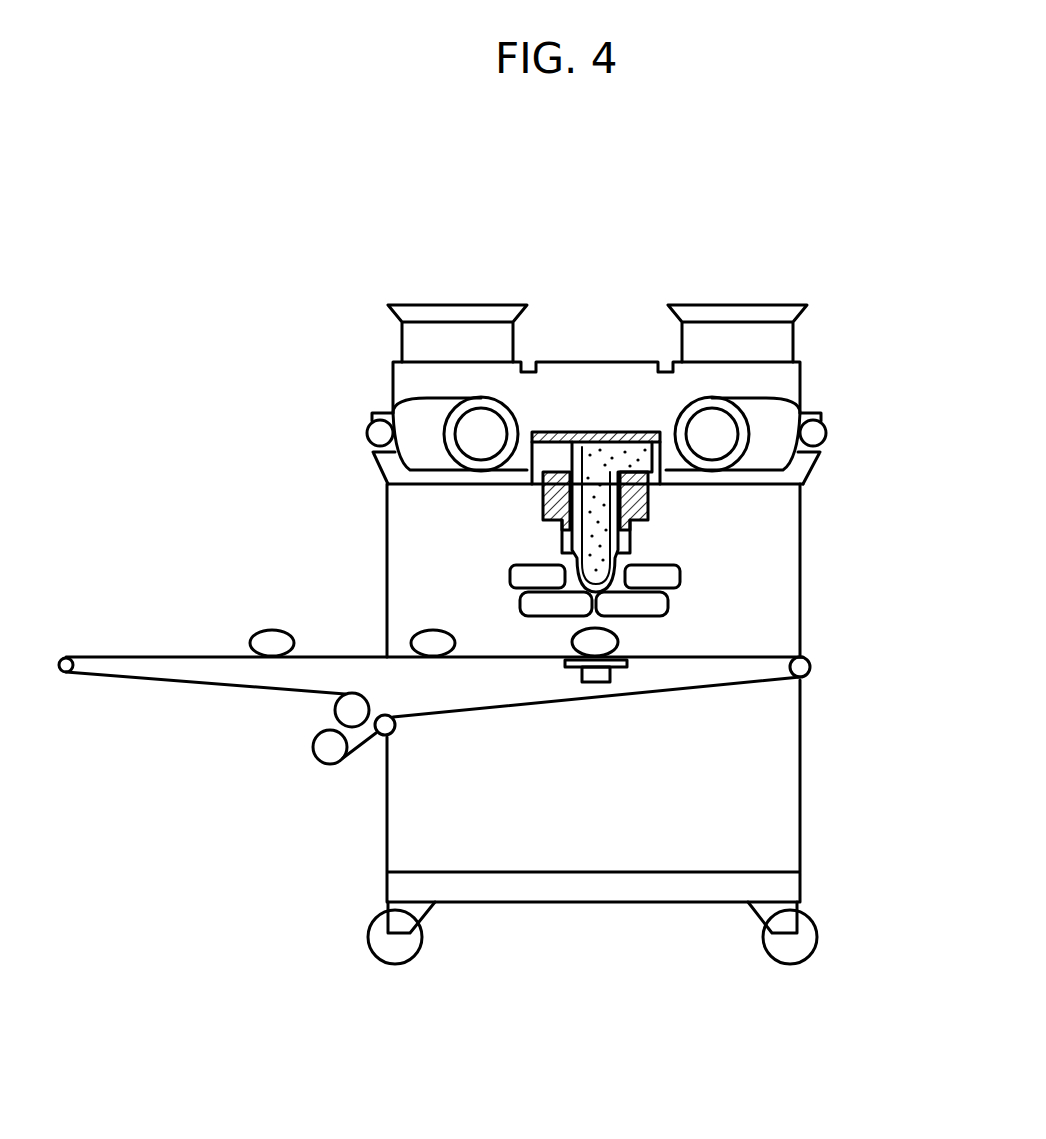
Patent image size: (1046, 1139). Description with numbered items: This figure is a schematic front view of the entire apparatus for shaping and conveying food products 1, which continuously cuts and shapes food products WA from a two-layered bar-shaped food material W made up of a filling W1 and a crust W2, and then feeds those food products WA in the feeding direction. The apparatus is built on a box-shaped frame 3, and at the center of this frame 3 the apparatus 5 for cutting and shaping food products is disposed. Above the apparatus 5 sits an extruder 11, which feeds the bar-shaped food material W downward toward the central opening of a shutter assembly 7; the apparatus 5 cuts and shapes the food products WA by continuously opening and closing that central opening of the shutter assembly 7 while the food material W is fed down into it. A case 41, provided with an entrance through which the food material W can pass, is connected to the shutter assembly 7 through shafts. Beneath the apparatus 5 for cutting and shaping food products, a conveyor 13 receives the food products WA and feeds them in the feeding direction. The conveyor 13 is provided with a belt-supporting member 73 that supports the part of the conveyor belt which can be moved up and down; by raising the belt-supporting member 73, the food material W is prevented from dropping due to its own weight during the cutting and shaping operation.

The apparatus for shaping and conveying food products 1 is at (560, 250).
The extruder 11 is at (598, 428).
The bar-shaped food material W is at (565, 559).
The filling W1 is at (605, 513).
The crust W2 is at (633, 538).
The case 41 is at (510, 577).
The apparatus for cutting and shaping food products 5 is at (692, 580).
The shutter assembly 7 is at (520, 605).
The belt-supporting member 73 is at (623, 667).
The conveyor 13 is at (560, 703).
The box-shaped frame 3 is at (800, 728).
The food products WA is at (252, 640).